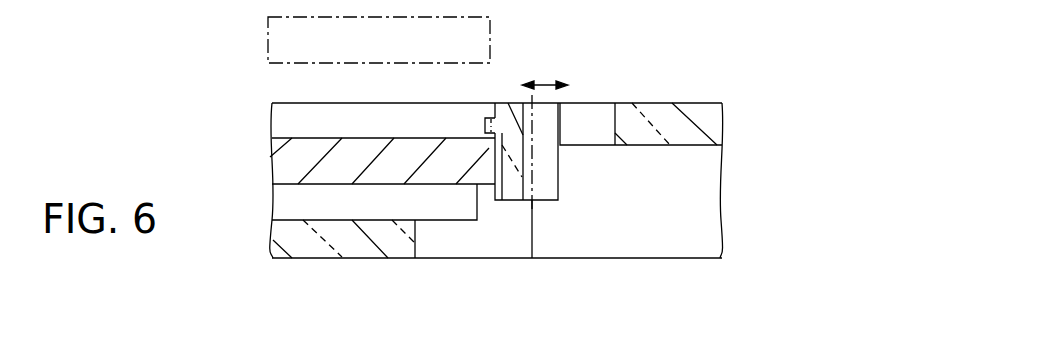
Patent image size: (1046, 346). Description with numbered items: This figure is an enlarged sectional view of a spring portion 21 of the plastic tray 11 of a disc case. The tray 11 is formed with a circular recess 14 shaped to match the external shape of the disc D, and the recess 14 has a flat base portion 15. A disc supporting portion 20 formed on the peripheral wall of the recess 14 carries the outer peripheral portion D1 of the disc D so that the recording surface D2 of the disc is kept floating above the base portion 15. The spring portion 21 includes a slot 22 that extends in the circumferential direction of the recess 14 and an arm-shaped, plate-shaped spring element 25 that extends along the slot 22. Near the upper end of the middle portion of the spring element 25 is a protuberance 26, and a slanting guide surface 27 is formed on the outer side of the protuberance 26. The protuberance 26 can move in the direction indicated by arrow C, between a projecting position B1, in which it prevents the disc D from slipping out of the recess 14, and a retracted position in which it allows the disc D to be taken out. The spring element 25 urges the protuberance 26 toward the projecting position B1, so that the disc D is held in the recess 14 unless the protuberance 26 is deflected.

The tray 11 is at (672, 103).
The recess 14 is at (308, 111).
The base portion 15 is at (298, 222).
The disc supporting portion 20 is at (478, 190).
The spring portion 21 is at (445, 92).
The slot 22 is at (593, 103).
The spring element 25 is at (510, 175).
The protuberance 26 is at (473, 140).
The slanting guide surface 27 is at (495, 118).
The projecting position B1 is at (486, 117).
The arrow C is at (548, 83).
The disc D is at (296, 139).
The outer peripheral portion D1 is at (488, 187).
The recording surface D2 is at (350, 186).